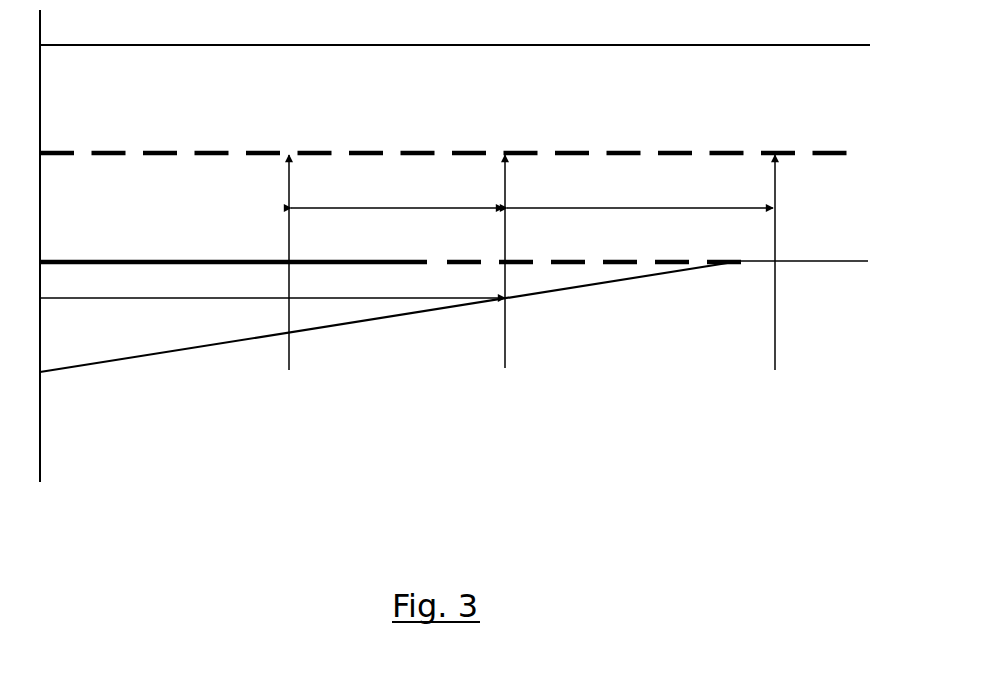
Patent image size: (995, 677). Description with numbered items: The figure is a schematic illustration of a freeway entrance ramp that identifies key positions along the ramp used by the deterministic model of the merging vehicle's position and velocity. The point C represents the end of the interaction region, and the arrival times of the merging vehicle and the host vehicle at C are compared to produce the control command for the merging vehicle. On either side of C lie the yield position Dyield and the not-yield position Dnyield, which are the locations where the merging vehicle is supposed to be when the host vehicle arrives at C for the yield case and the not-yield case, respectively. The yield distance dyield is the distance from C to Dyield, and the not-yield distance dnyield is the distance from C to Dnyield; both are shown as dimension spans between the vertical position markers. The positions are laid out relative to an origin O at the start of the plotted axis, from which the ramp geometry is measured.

The yield position Dyield is at (292, 281).
The end of interaction region C is at (505, 280).
The not-yield position Dnyield is at (776, 278).
The yield distance dyield is at (397, 192).
The not-yield distance dnyield is at (640, 191).
The origin O is at (41, 503).